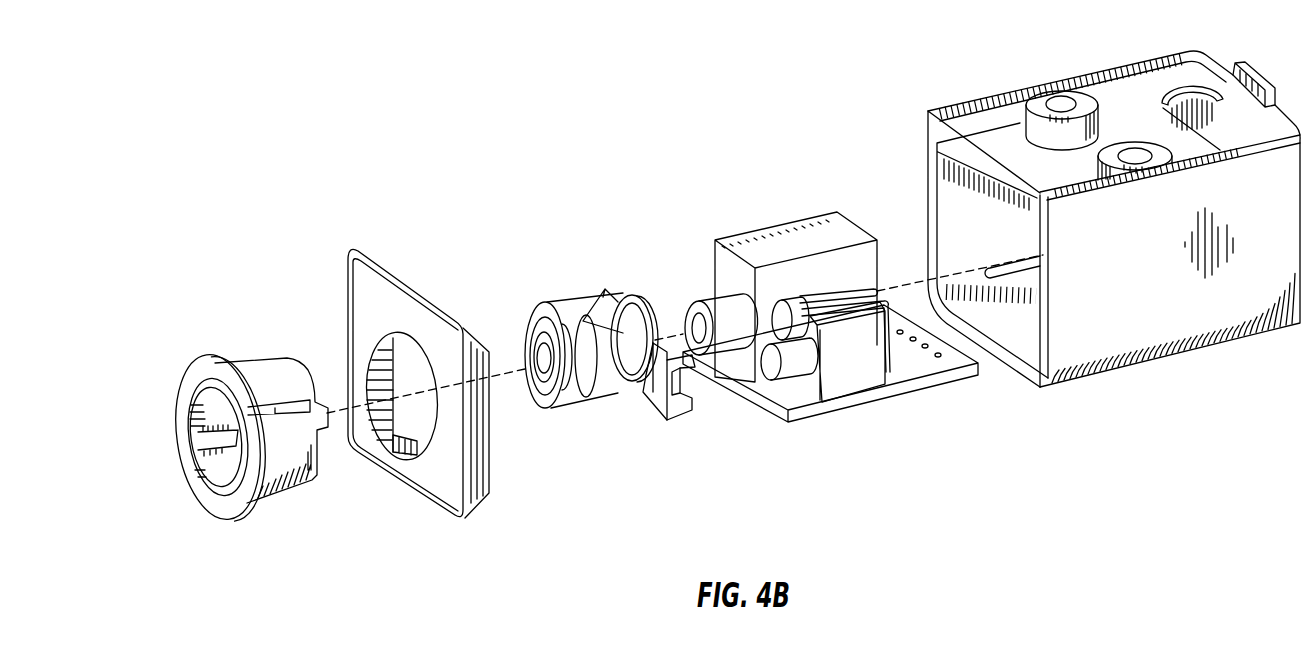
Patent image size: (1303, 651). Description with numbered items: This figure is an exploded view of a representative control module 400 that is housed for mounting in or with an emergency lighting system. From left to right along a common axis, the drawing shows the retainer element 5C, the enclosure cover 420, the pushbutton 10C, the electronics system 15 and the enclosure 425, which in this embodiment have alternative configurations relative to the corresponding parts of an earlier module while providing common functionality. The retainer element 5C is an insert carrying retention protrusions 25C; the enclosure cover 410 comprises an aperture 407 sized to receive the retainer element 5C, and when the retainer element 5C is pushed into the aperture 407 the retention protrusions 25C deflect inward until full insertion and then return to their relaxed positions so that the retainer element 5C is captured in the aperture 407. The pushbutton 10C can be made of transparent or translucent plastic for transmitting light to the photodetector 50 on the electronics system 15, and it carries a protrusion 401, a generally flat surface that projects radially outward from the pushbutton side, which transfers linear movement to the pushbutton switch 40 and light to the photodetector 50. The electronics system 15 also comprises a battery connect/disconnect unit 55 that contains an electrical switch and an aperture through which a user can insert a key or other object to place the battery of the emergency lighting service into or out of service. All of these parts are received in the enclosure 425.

The control module 400 is at (263, 141).
The retainer element 5C is at (213, 348).
The retention protrusions 25C is at (270, 372).
The enclosure cover 420 is at (378, 238).
The enclosure cover 410 is at (358, 306).
The aperture 407 is at (405, 422).
The pushbutton 10C is at (553, 289).
The protrusion 401 is at (648, 403).
The electronics system 15 is at (722, 215).
The battery connect/disconnect unit 55 is at (800, 232).
The photodetector 50 is at (775, 325).
The pushbutton switch 40 is at (771, 375).
The enclosure 425 is at (982, 79).